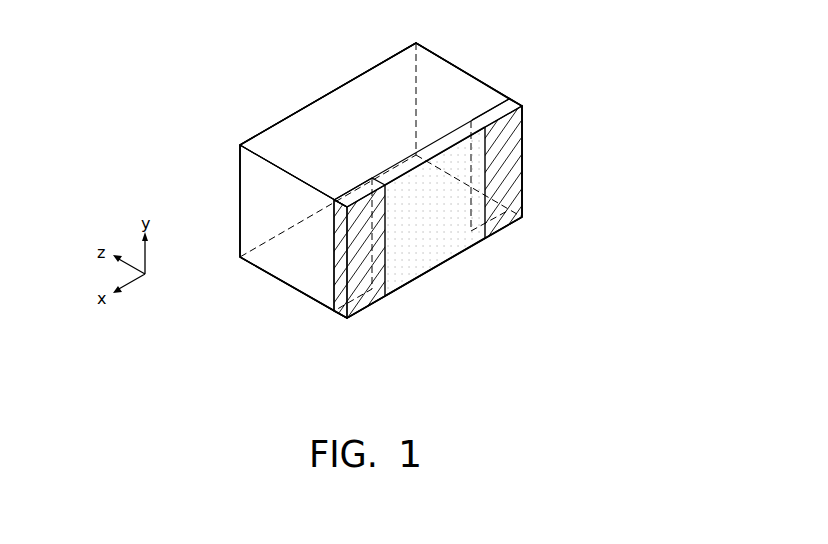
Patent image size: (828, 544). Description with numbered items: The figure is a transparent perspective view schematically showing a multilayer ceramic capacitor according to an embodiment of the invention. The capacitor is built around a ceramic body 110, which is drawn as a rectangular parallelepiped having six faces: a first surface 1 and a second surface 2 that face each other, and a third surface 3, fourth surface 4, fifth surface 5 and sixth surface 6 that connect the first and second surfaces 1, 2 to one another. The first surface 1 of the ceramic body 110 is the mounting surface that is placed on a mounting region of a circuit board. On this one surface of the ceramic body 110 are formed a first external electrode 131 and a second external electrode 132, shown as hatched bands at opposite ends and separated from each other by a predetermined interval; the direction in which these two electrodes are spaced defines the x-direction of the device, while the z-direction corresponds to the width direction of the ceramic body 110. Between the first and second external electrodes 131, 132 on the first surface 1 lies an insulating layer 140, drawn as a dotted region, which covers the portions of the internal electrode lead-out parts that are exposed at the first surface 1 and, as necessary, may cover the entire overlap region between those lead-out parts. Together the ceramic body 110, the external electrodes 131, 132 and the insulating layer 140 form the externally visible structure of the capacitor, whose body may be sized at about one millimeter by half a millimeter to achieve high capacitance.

The first surface 1 is at (448, 233).
The ceramic body 110 is at (241, 178).
The first external electrode 131 is at (358, 313).
The second external electrode 132 is at (521, 190).
The insulating layer 140 is at (410, 283).
The second surface 2 is at (288, 148).
The third surface 3 is at (243, 223).
The fourth surface 4 is at (450, 86).
The fifth surface 5 is at (356, 103).
The sixth surface 6 is at (318, 278).